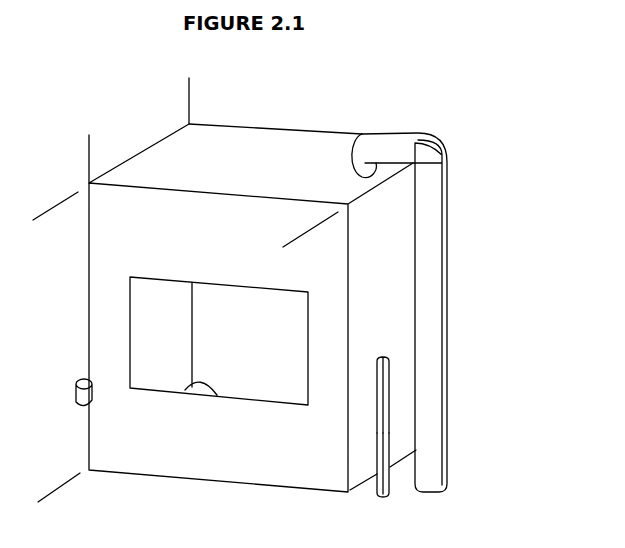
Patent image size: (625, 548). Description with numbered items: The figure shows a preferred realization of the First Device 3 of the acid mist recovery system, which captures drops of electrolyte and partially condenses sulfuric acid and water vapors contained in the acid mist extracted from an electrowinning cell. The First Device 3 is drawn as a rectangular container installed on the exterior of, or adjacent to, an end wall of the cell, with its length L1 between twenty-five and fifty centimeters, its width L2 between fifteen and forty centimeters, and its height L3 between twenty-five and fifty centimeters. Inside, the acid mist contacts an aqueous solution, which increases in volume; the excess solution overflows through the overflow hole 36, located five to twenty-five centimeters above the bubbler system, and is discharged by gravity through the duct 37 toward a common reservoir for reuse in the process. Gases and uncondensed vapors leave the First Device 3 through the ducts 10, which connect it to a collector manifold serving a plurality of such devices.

The First Device 3 is at (263, 150).
The ducts 10 is at (433, 253).
The overflow hole 36 is at (378, 357).
The duct 37 is at (385, 433).
The length L1 is at (323, 233).
The width L2 is at (73, 165).
The height L3 is at (56, 206).